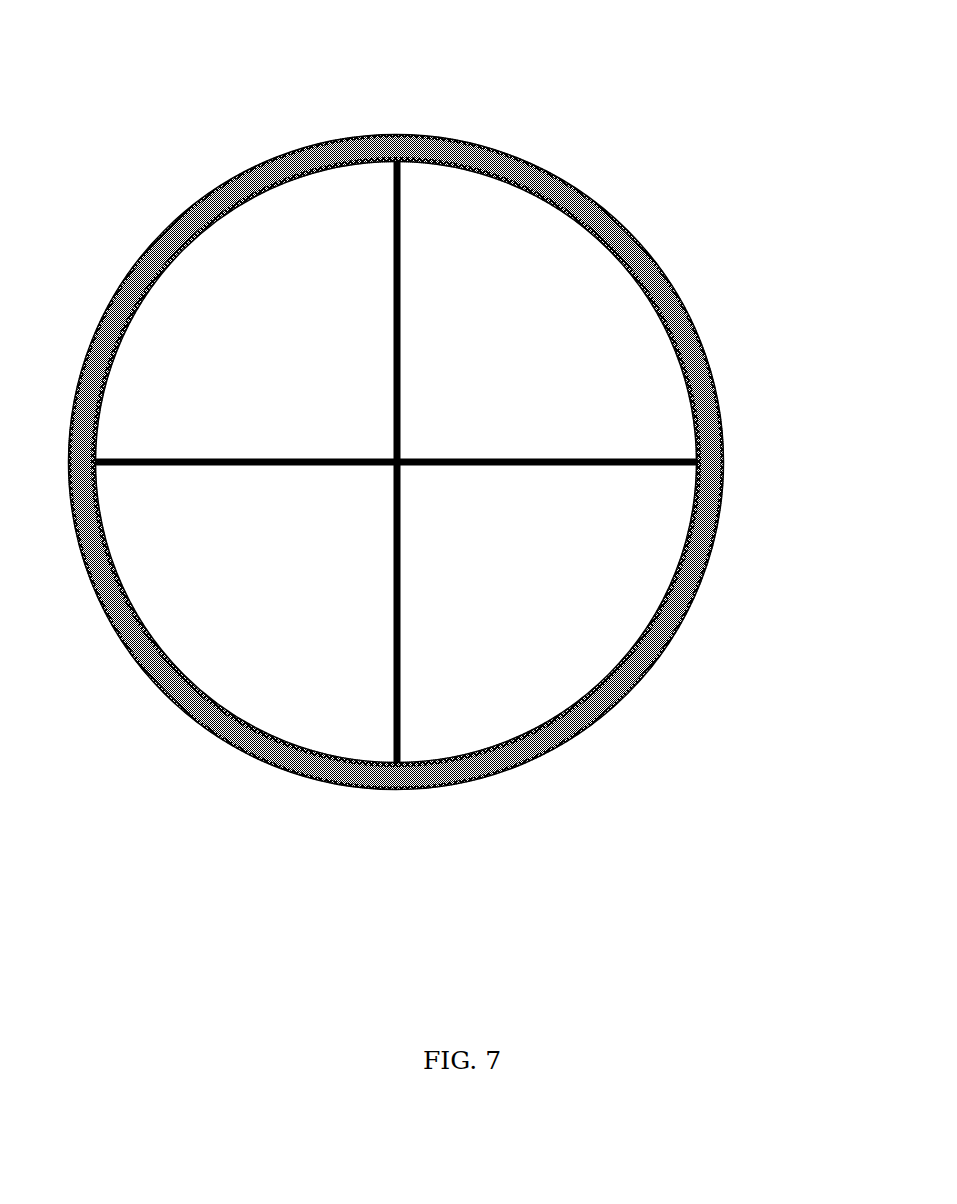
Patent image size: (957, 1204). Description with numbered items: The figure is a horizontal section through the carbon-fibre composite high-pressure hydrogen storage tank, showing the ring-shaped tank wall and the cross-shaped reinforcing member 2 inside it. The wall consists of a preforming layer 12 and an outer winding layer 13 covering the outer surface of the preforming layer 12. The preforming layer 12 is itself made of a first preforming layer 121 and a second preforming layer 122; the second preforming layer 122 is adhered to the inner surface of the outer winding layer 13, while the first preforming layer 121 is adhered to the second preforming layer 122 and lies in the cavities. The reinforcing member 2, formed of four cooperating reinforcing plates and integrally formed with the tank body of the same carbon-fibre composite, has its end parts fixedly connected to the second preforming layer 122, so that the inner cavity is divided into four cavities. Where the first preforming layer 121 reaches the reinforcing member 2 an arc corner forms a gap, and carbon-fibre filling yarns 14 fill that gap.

The reinforcing member 2 is at (402, 233).
The preforming layer 12 is at (668, 643).
The outer winding layer 13 is at (575, 187).
The carbon-fibre filling yarns 14 is at (703, 460).
The first preforming layer 121 is at (700, 343).
The second preforming layer 122 is at (702, 592).